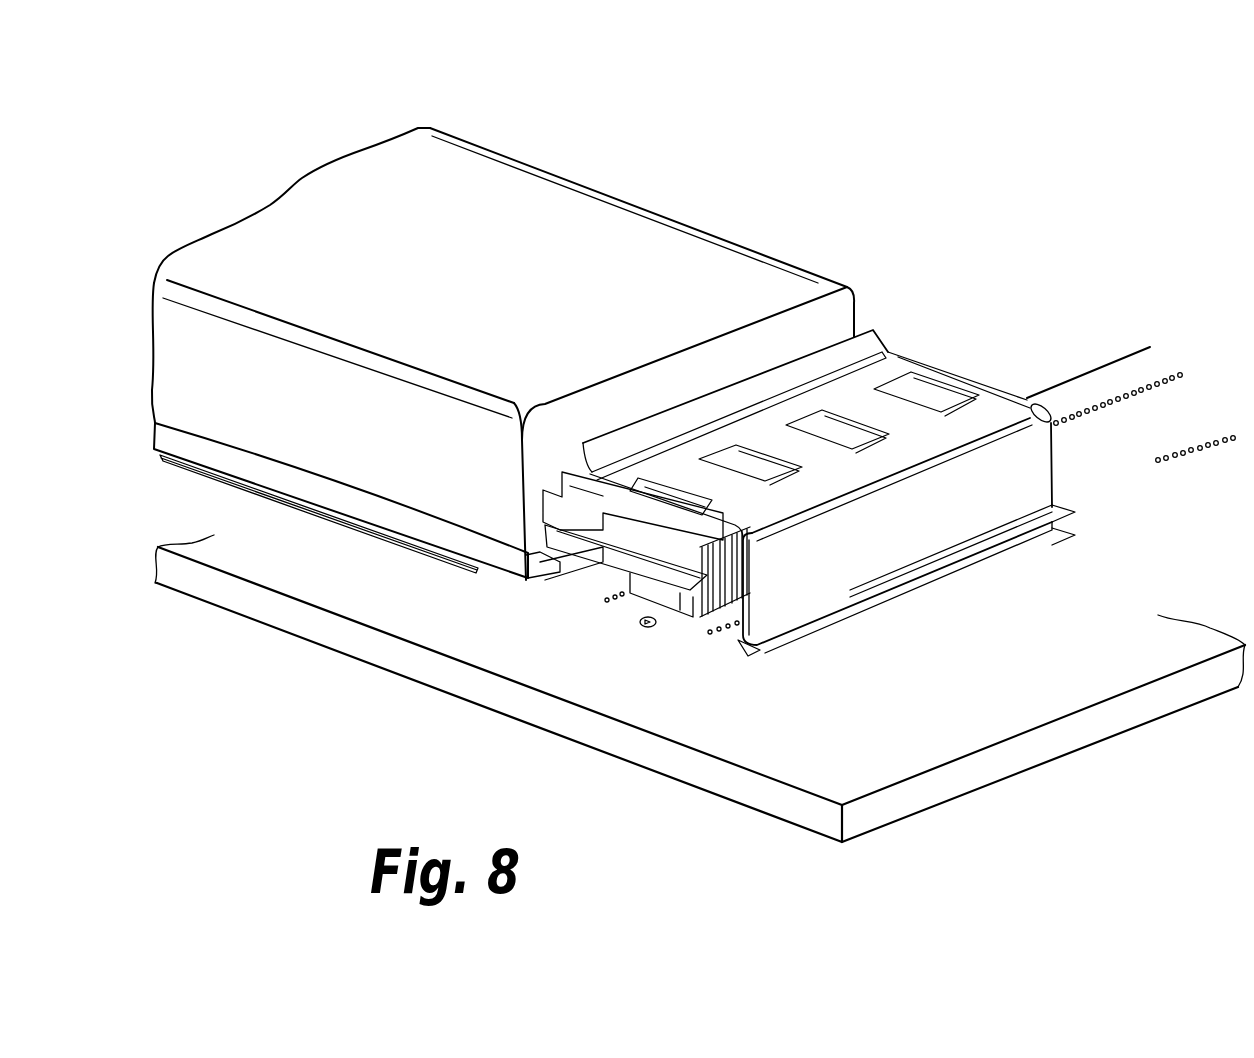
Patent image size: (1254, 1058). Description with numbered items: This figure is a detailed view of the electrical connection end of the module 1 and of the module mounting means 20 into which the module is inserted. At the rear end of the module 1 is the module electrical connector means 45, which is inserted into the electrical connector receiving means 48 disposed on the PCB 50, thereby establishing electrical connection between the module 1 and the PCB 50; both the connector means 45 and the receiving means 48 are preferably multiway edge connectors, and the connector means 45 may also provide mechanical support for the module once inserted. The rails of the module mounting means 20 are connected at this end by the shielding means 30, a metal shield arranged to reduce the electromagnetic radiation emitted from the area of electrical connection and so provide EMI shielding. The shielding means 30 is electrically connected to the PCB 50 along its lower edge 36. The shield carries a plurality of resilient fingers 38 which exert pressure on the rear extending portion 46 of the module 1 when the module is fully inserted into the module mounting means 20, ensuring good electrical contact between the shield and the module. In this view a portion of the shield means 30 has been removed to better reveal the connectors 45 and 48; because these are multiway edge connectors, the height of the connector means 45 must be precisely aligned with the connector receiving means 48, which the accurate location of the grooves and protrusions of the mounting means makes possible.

The module 1 is at (530, 206).
The module mounting means 20 is at (897, 330).
The shielding means 30 is at (1003, 512).
The lower edge 36 is at (763, 647).
The resilient fingers 38 is at (648, 485).
The module electrical connector means 45 is at (613, 553).
The rear extending portion 46 is at (578, 482).
The electrical connector receiving means 48 is at (650, 595).
The PCB 50 is at (680, 773).